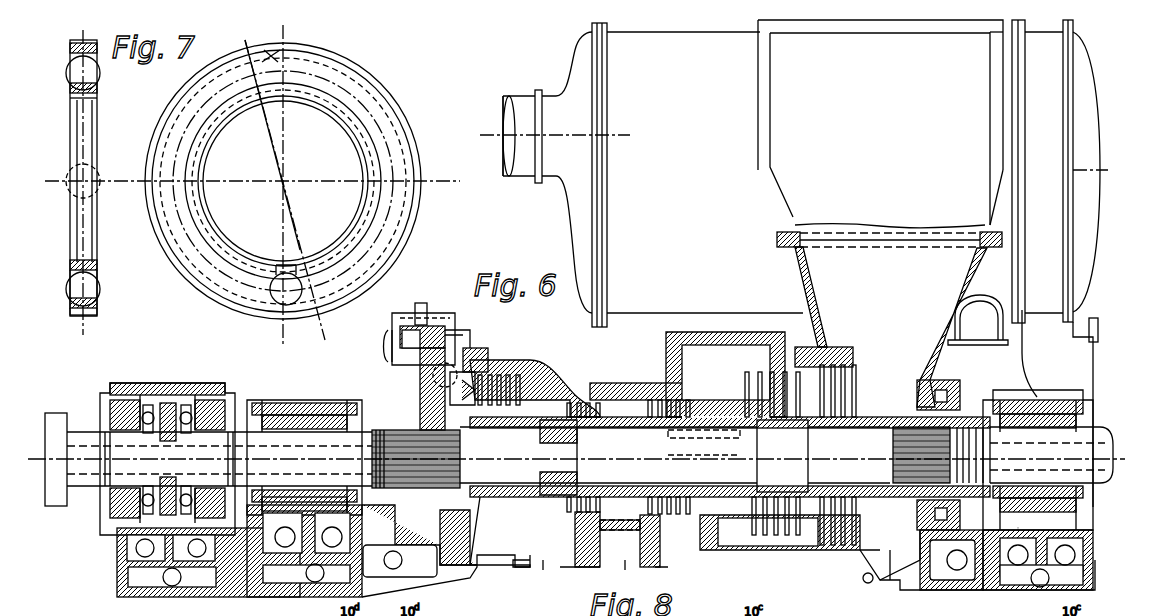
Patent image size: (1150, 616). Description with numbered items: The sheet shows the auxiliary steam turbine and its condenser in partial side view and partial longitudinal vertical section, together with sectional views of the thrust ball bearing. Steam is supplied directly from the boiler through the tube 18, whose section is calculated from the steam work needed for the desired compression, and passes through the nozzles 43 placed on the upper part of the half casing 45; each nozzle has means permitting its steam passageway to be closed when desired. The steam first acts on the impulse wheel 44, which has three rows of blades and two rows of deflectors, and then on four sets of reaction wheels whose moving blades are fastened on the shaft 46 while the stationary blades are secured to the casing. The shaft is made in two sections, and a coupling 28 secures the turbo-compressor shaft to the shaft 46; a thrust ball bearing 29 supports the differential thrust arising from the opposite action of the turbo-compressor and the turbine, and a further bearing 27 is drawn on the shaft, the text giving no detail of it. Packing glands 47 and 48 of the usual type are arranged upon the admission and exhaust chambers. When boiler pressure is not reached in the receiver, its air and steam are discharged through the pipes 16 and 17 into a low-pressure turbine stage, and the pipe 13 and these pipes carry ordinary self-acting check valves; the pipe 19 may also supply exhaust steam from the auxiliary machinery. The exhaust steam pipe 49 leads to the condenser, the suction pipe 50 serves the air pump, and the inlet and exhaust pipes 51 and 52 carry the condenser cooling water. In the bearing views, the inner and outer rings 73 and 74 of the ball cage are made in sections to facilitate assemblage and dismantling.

In FIG. 6, the pipe 13 is at (428, 366).
In FIG. 6, the pipe 16 is at (539, 573).
In FIG. 6, the pipe 17 is at (635, 573).
In FIG. 6, the tube 18 is at (390, 335).
In FIG. 6, the pipe 19 is at (718, 340).
In FIG. 6, the bearing 27 is at (297, 407).
In FIG. 6, the coupling 28 is at (56, 420).
In FIG. 6, the thrust ball bearing 29 is at (186, 384).
In FIG. 6, the nozzle 43 is at (485, 378).
In FIG. 6, the impulse wheel 44 is at (515, 395).
In FIG. 6, the half casing 45 is at (478, 348).
In FIG. 6, the shaft 46 is at (578, 433).
In FIG. 6, the packing gland 47 is at (392, 410).
In FIG. 6, the packing gland 48 is at (955, 400).
In FIG. 6, the exhaust steam pipe 49 is at (794, 213).
In FIG. 6, the suction pipe 50 is at (993, 333).
In FIG. 6, the inlet pipe 51 is at (519, 100).
In FIG. 6, the exhaust pipe 52 is at (1086, 336).
In FIG. 7, the inner ring 73 is at (92, 92).
In FIG. 7, the outer ring 74 is at (94, 302).